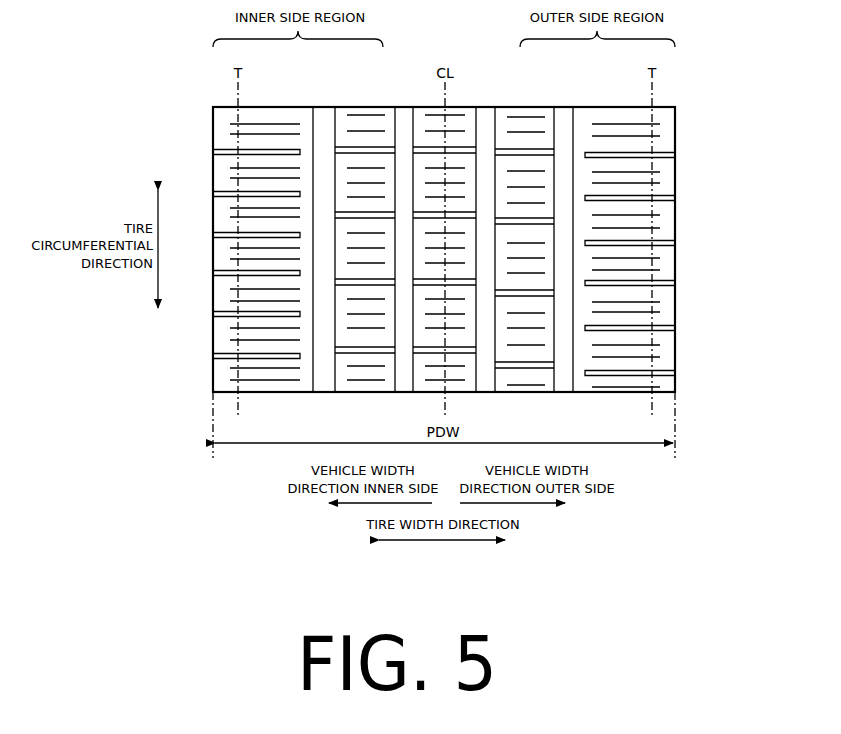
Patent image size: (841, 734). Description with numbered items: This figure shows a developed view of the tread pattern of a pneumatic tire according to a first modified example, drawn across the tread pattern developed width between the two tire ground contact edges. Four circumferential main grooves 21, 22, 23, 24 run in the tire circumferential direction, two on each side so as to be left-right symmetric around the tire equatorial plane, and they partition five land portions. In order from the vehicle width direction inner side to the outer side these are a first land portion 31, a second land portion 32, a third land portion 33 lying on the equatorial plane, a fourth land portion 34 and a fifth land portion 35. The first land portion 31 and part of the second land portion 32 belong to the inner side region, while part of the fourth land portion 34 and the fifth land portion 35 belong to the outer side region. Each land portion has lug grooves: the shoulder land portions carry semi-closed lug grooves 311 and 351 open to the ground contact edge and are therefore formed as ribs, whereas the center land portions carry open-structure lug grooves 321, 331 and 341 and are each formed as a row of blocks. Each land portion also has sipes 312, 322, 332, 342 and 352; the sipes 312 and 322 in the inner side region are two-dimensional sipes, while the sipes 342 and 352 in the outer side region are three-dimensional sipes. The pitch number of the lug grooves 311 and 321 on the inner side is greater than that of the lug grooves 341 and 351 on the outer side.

The first circumferential main groove 21 is at (325, 110).
The second circumferential main groove 22 is at (405, 110).
The third circumferential main groove 23 is at (488, 110).
The fourth circumferential main groove 24 is at (565, 110).
The first land portion 31 is at (270, 104).
The second land portion 32 is at (357, 104).
The third land portion 33 is at (463, 104).
The fourth land portion 34 is at (528, 104).
The fifth land portion 35 is at (606, 104).
The lug groove 311 is at (228, 151).
The sipe 312 is at (235, 178).
The lug groove 321 is at (335, 215).
The sipe 322 is at (357, 263).
The lug groove 331 is at (458, 283).
The sipe 332 is at (456, 300).
The lug groove 341 is at (550, 221).
The sipe 342 is at (545, 273).
The lug groove 351 is at (665, 154).
The sipe 352 is at (658, 183).